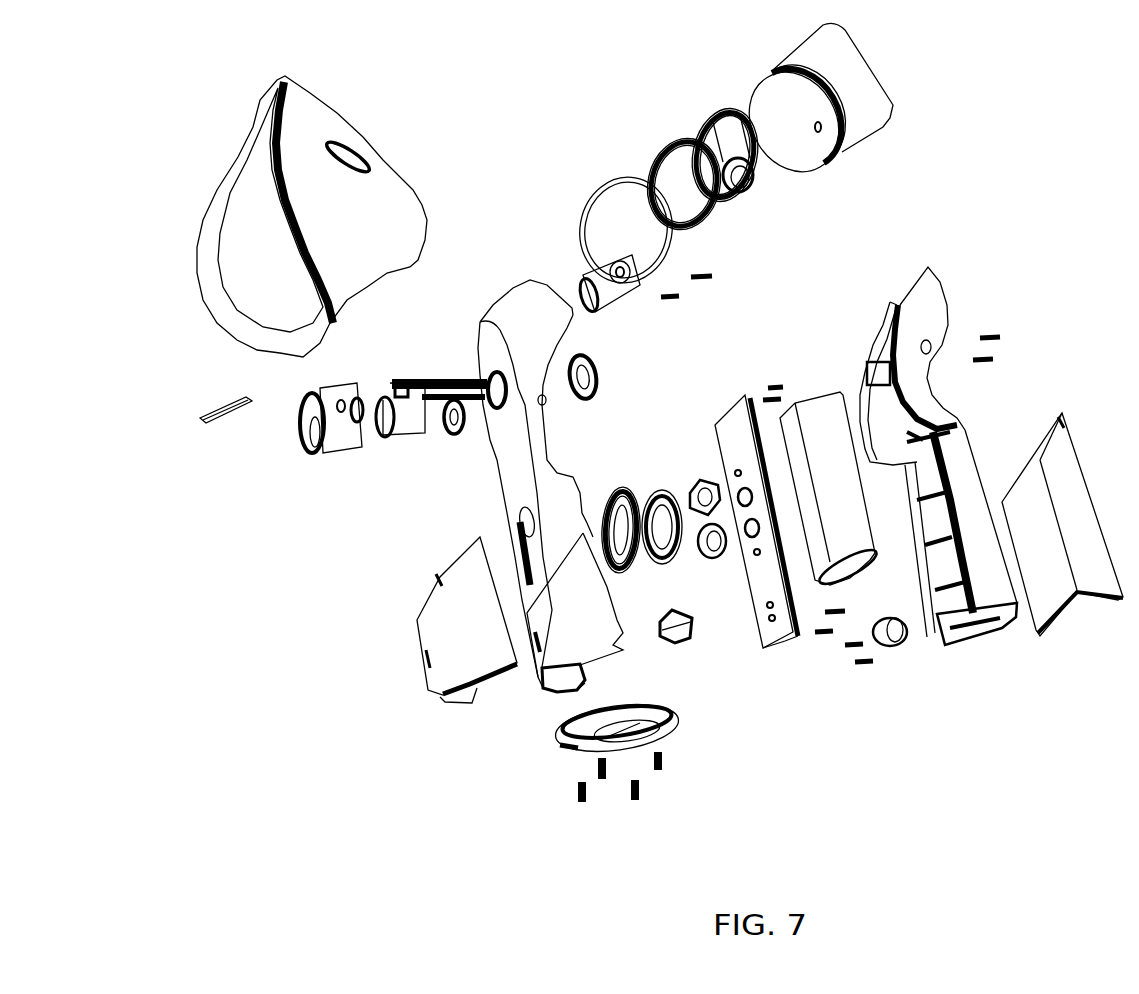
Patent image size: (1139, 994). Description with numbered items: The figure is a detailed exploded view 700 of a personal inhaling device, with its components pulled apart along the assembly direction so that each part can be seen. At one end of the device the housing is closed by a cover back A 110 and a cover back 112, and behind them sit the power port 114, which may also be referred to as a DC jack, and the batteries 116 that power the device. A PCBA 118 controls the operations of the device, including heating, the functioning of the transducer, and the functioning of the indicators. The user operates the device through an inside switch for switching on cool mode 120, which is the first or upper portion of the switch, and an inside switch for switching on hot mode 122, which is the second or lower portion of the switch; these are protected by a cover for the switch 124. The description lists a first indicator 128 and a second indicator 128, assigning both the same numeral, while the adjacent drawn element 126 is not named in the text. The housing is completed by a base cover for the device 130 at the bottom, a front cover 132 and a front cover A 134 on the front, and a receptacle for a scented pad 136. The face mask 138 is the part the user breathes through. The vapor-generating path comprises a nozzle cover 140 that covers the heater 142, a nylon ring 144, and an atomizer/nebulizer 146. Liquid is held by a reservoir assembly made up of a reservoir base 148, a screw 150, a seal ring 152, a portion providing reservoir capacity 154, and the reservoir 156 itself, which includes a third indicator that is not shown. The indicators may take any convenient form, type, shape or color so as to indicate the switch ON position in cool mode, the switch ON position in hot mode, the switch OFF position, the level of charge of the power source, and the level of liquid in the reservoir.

The detailed exploded view 700 is at (228, 68).
The cover back A 110 is at (1073, 606).
The cover back 112 is at (986, 632).
The power port 114 is at (888, 641).
The batteries 116 is at (872, 553).
The PCBA 118 is at (777, 634).
The inside switch for switching on cool mode 120 is at (697, 480).
The inside switch for switching on hot mode 122 is at (718, 560).
The cover for the switch 124 is at (668, 556).
The switch 126 is at (694, 639).
The first indicator 128 is at (628, 568).
The base cover for the device 130 is at (667, 724).
The front cover 132 is at (612, 638).
The front cover A 134 is at (451, 701).
The receptacle for a scented pad 136 is at (225, 427).
The face mask 138 is at (363, 258).
The nozzle cover 140 is at (350, 449).
The heater 142 is at (412, 437).
The nylon ring 144 is at (458, 437).
The atomizer/nebulizer 146 is at (596, 390).
The reservoir base 148 is at (614, 290).
The screw 150 is at (714, 280).
The seal ring 152 is at (713, 217).
The portion providing reservoir capacity 154 is at (771, 185).
The reservoir 156 is at (851, 128).